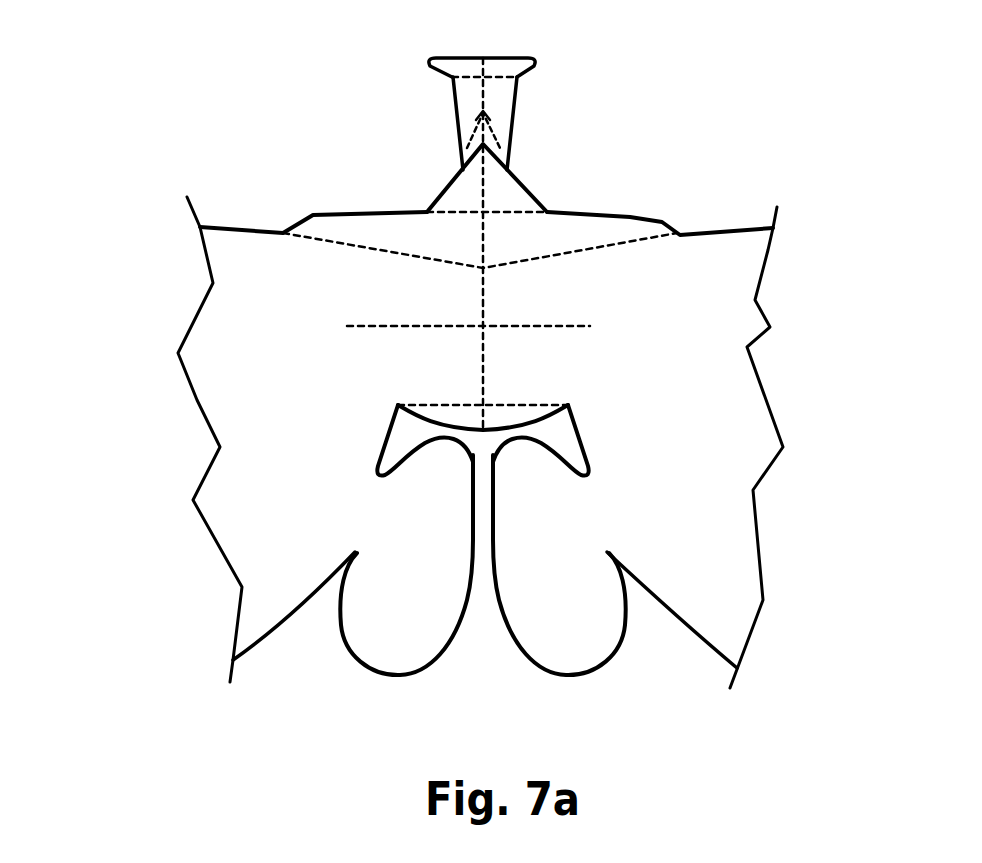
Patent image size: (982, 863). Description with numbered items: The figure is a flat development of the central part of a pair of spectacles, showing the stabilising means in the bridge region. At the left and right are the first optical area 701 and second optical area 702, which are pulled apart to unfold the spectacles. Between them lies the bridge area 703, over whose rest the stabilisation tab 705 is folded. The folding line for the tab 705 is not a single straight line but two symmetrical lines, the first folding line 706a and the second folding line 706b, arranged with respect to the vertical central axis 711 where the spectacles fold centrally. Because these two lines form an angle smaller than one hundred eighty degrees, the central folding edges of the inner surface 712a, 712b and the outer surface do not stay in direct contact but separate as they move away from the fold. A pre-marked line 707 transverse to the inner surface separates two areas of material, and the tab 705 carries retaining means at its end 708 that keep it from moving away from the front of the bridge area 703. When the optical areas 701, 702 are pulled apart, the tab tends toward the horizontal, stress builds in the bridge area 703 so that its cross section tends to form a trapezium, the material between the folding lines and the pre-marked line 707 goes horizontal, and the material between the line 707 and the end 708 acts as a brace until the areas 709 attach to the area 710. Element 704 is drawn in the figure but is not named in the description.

The first optical area 701 is at (713, 410).
The second optical area 702 is at (227, 379).
The bridge area 703 is at (512, 373).
The nostrils (alar rims) 704 is at (560, 653).
The stabilisation means or tab 705 is at (430, 182).
The first folding line 706a is at (333, 247).
The second folding line 706b is at (677, 233).
The pre-marked line 707 is at (483, 247).
The end with retaining means 708 is at (508, 73).
The areas 709 is at (470, 67).
The area 710 is at (433, 405).
The vertical central axis 711 is at (483, 320).
The inner surface 712a is at (483, 267).
The inner surface 712b is at (485, 180).